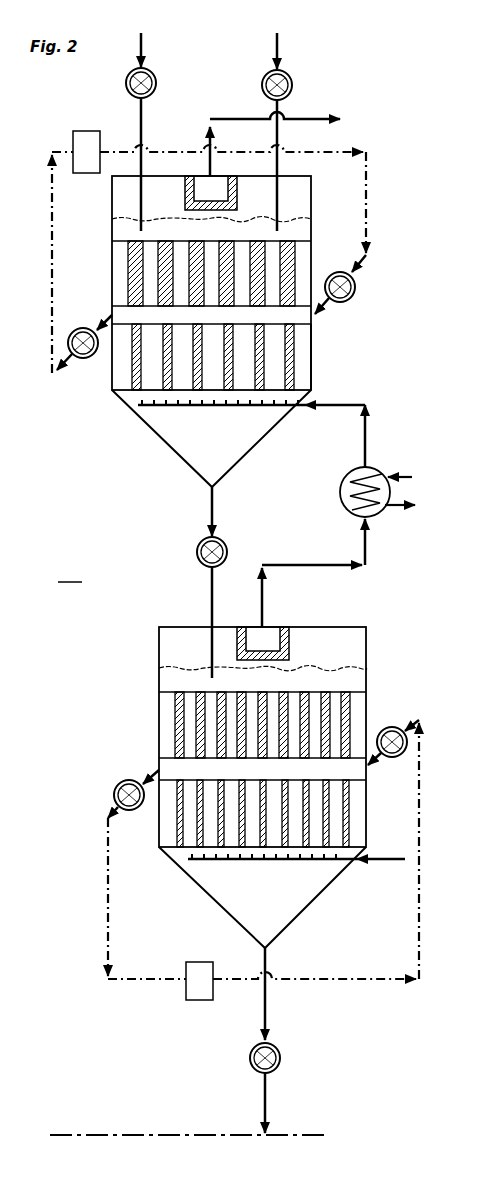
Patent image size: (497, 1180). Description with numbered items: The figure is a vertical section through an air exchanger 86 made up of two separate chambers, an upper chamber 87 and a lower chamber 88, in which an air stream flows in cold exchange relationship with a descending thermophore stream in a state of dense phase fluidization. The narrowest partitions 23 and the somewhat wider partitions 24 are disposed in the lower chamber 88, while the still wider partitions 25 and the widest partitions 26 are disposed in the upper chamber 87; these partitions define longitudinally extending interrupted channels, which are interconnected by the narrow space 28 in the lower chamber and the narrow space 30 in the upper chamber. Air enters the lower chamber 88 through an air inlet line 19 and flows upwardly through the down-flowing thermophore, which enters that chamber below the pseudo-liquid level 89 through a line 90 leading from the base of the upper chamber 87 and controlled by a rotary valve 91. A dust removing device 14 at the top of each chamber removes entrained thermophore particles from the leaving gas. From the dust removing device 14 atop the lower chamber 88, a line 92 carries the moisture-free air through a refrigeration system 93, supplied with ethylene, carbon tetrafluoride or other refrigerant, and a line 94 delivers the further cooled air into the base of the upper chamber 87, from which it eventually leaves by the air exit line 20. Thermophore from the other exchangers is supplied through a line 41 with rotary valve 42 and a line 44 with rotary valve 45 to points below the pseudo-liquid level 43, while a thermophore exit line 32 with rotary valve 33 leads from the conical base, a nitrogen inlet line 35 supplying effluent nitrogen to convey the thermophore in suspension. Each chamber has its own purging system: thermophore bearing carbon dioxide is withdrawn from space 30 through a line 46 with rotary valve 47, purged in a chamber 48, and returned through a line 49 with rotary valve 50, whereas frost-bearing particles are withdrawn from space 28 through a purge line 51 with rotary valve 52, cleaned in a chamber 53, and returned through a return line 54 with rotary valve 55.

The dust removing device 14 is at (185, 200).
The air inlet line 19 is at (405, 859).
The air exit line 20 is at (330, 112).
The partitions 23 is at (352, 816).
The partitions 24 is at (350, 712).
The partitions 25 is at (294, 361).
The partitions 26 is at (292, 262).
The narrow space 28 is at (165, 767).
The narrow space 30 is at (112, 305).
The thermophore exit line 32 is at (268, 958).
The rotary valve 33 is at (281, 1060).
The nitrogen inlet line 35 is at (305, 1131).
The line 41 is at (150, 45).
The rotary valve 42 is at (157, 84).
The pseudo-liquid level 43 is at (300, 218).
The line 44 is at (285, 48).
The rotary valve 45 is at (293, 86).
The line 46 is at (72, 372).
The rotary valve 47 is at (86, 359).
The chamber 48 is at (209, 252).
The line 49 is at (324, 306).
The rotary valve 50 is at (356, 289).
The purge line 51 is at (112, 775).
The rotary valve 52 is at (131, 812).
The chamber 53 is at (263, 861).
The return line 54 is at (377, 760).
The rotary valve 55 is at (408, 745).
The air exchanger 86 is at (70, 573).
The upper chamber 87 is at (313, 374).
The lower chamber 88 is at (159, 736).
The pseudo-liquid level 89 is at (159, 668).
The line 90 is at (212, 506).
The rotary valve 91 is at (197, 556).
The line 92 is at (318, 554).
The refrigeration system 93 is at (378, 468).
The line 94 is at (368, 432).